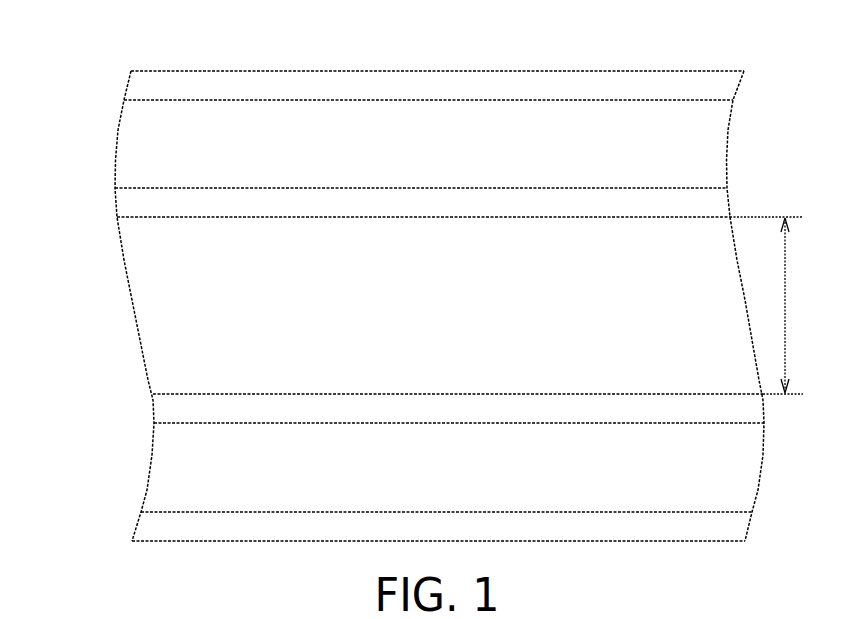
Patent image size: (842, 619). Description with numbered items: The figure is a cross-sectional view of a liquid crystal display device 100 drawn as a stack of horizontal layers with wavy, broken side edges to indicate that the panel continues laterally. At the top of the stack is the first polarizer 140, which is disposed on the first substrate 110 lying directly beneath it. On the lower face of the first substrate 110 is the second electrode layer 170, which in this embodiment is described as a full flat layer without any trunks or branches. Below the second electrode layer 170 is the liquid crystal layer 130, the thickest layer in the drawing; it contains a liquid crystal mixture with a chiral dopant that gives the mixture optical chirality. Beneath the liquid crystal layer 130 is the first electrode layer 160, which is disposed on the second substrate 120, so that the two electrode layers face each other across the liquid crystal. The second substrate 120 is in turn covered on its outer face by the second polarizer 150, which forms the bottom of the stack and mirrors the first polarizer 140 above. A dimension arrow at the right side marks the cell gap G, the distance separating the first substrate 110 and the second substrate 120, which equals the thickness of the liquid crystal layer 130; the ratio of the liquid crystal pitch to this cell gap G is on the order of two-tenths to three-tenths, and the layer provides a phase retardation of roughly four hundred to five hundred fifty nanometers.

The liquid crystal display device 100 is at (53, 51).
The first polarizer 140 is at (138, 88).
The first substrate 110 is at (143, 156).
The second electrode layer 170 is at (132, 204).
The liquid crystal layer 130 is at (162, 322).
The first electrode layer 160 is at (166, 411).
The second substrate 120 is at (173, 471).
The second polarizer 150 is at (148, 528).
The cell gap G is at (773, 305).